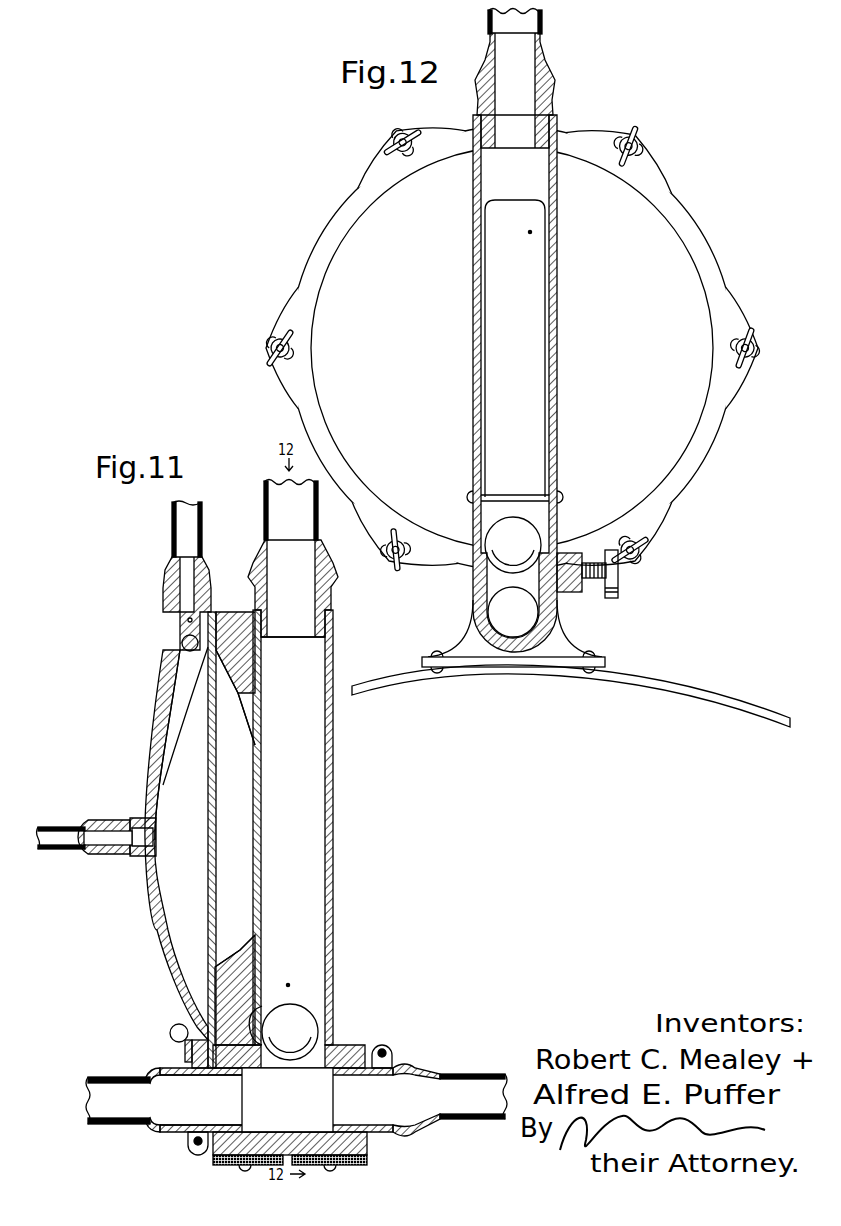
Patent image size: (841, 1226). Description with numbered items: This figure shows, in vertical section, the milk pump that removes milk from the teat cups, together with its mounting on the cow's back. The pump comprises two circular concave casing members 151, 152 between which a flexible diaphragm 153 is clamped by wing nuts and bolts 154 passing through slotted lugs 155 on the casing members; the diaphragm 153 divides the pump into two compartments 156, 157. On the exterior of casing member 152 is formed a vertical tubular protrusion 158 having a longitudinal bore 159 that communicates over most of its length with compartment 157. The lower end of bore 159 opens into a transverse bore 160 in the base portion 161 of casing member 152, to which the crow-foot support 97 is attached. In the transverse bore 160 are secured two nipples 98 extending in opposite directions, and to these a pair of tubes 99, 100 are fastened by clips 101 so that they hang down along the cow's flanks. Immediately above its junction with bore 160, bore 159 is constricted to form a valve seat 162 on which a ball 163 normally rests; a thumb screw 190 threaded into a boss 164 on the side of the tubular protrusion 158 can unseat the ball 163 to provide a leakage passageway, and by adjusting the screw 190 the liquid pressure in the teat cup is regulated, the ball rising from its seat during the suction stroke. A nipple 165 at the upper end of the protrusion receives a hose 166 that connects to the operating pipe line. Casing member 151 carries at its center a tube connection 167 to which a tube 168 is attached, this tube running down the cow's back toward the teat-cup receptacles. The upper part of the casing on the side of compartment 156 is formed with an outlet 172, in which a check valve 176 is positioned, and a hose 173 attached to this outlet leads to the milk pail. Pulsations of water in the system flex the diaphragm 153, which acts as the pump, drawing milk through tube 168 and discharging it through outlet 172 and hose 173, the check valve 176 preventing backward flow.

In FIG. 12, the crow-foot support 97 is at (690, 688).
In FIG. 11, the crow-foot support 97 is at (344, 1148).
In FIG. 11, the nipples 98 is at (152, 1070).
In FIG. 11, the tube 99 is at (90, 1078).
In FIG. 11, the tube 100 is at (474, 1076).
In FIG. 11, the clips 101 is at (385, 1045).
In FIG. 11, the casing member 151 is at (148, 894).
In FIG. 12, the casing member 152 is at (660, 245).
In FIG. 11, the casing member 152 is at (241, 669).
In FIG. 11, the flexible diaphragm 153 is at (210, 881).
In FIG. 12, the wing nuts and bolts 154 is at (392, 143).
In FIG. 12, the slotted lugs 155 is at (278, 340).
In FIG. 11, the slotted lugs 155 is at (172, 1029).
In FIG. 11, the compartment 156 is at (167, 753).
In FIG. 11, the compartment 157 is at (236, 809).
In FIG. 12, the tubular protrusion 158 is at (556, 234).
In FIG. 11, the tubular protrusion 158 is at (334, 754).
In FIG. 12, the longitudinal bore 159 is at (505, 302).
In FIG. 11, the longitudinal bore 159 is at (305, 855).
In FIG. 12, the transverse bore 160 is at (505, 606).
In FIG. 11, the transverse bore 160 is at (262, 1086).
In FIG. 12, the base portion 161 is at (473, 666).
In FIG. 11, the base portion 161 is at (281, 1152).
In FIG. 12, the valve seat 162 is at (472, 561).
In FIG. 11, the valve seat 162 is at (258, 1002).
In FIG. 12, the ball 163 is at (513, 535).
In FIG. 11, the ball 163 is at (302, 1020).
In FIG. 12, the boss 164 is at (563, 553).
In FIG. 12, the nipple 165 is at (494, 72).
In FIG. 11, the nipple 165 is at (268, 578).
In FIG. 12, the hose 166 is at (546, 19).
In FIG. 11, the hose 166 is at (263, 496).
In FIG. 11, the tube connection 167 is at (97, 823).
In FIG. 11, the tube 168 is at (56, 828).
In FIG. 11, the outlet 172 is at (180, 619).
In FIG. 11, the hose 173 is at (190, 521).
In FIG. 11, the check valve 176 is at (182, 644).
In FIG. 12, the thumb screw 190 is at (609, 552).